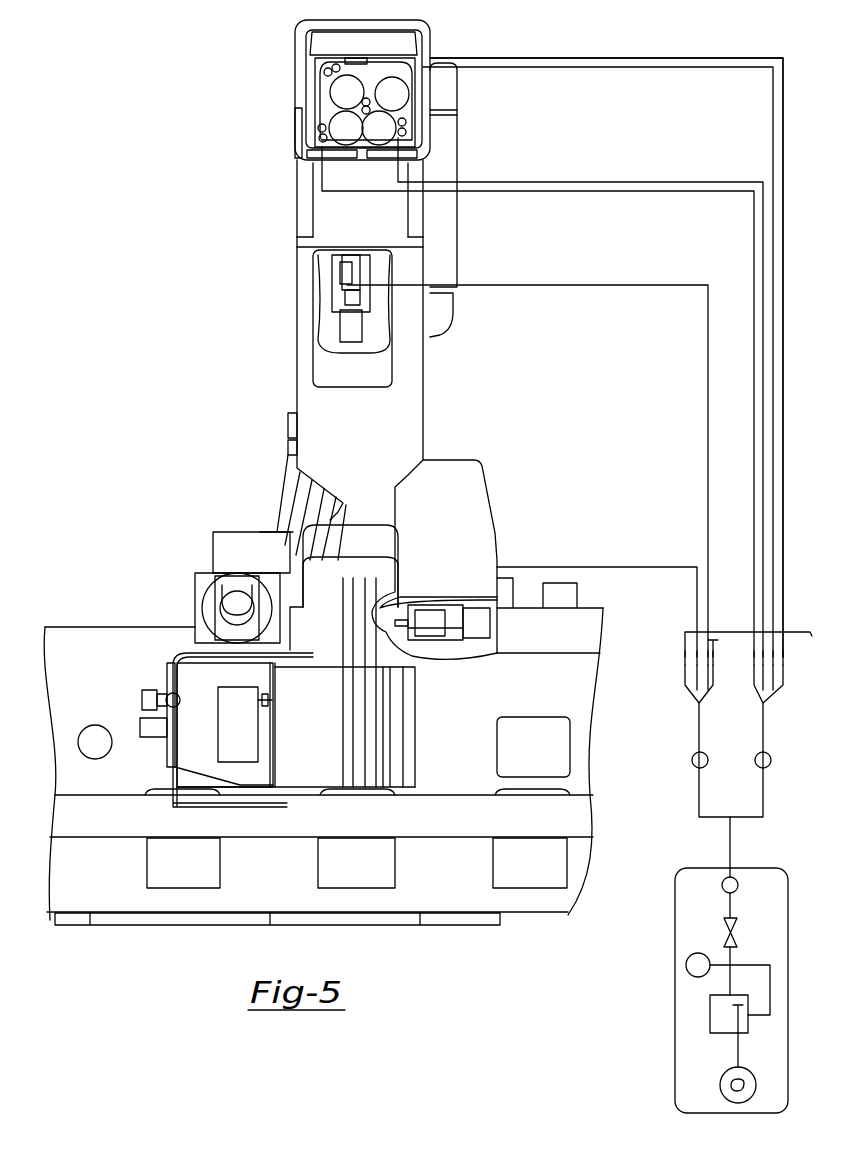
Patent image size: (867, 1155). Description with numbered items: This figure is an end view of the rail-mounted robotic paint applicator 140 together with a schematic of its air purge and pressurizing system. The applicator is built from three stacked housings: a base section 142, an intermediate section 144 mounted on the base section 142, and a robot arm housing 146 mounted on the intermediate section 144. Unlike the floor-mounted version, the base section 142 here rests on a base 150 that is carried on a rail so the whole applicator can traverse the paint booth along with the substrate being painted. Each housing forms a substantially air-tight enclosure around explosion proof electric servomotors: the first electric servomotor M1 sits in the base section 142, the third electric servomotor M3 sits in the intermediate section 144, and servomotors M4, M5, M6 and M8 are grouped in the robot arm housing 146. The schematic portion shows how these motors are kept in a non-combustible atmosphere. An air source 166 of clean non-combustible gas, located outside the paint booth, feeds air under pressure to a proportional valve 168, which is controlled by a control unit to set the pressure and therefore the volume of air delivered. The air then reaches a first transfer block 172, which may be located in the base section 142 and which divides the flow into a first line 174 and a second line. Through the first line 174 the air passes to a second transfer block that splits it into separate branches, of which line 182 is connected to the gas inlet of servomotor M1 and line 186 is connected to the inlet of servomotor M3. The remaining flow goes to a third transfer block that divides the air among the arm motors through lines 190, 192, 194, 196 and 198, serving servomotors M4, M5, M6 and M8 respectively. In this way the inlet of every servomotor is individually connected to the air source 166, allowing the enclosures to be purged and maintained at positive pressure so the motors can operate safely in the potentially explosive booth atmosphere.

The robotic paint applicator 140 is at (252, 327).
The base section 142 is at (128, 826).
The intermediate section 144 is at (423, 400).
The robot arm housing 146 is at (295, 112).
The base 150 is at (128, 970).
The air source 166 is at (722, 1078).
The valve 168 is at (728, 933).
The first transfer block 172 is at (730, 817).
The first line 174 is at (730, 850).
The line to first servomotor 182 is at (590, 567).
The line to third servomotor 186 is at (708, 375).
The line to servomotor M4 190 is at (673, 67).
The line to servomotor M5 192 is at (645, 191).
The line to servomotor M6 194 is at (627, 182).
The line to servomotor M7 196 is at (638, 58).
The line to servomotor M8 198 is at (606, 357).
The first electric servomotor M1 is at (485, 622).
The third electric servomotor M3 is at (350, 283).
The electric servomotor M4 is at (392, 94).
The electric servomotor M5 is at (346, 128).
The electric servomotor M6 is at (379, 128).
The electric servomotor M8 is at (347, 92).